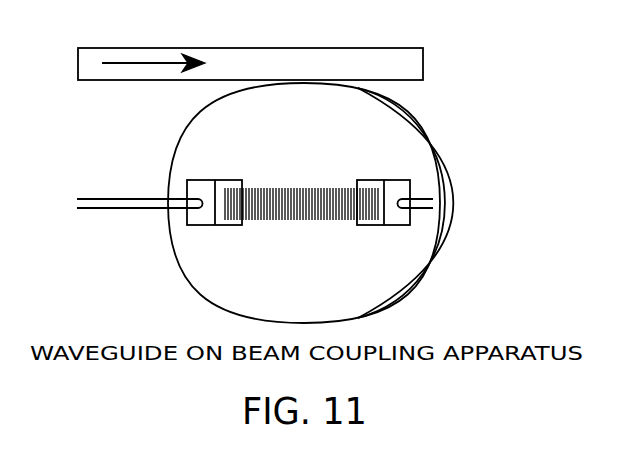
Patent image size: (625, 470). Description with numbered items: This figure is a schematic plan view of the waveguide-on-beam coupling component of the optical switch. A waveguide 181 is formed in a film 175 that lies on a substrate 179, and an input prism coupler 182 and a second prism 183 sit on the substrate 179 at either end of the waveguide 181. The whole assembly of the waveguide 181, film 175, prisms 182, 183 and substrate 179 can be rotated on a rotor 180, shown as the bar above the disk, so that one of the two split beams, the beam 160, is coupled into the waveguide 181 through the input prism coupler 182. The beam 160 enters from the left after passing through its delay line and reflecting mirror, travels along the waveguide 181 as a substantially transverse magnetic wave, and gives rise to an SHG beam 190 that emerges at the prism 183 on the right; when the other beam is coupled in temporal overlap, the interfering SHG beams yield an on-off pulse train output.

The beam 160 is at (141, 199).
The film 175 is at (446, 208).
The substrate 179 is at (453, 188).
The rotor 180 is at (348, 54).
The waveguide 181 is at (312, 222).
The input prism coupler 182 is at (203, 185).
The prism 183 is at (397, 185).
The SHG beam 190 is at (426, 210).